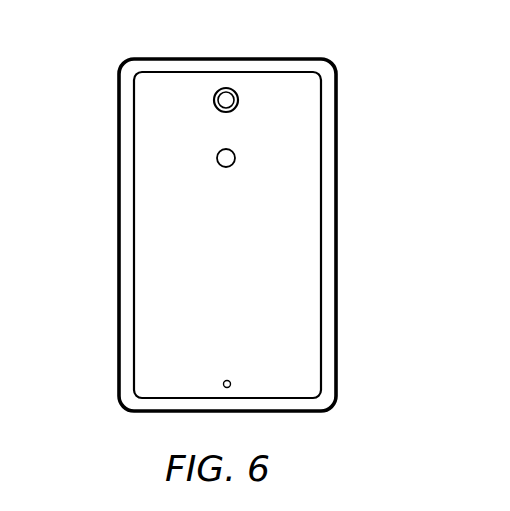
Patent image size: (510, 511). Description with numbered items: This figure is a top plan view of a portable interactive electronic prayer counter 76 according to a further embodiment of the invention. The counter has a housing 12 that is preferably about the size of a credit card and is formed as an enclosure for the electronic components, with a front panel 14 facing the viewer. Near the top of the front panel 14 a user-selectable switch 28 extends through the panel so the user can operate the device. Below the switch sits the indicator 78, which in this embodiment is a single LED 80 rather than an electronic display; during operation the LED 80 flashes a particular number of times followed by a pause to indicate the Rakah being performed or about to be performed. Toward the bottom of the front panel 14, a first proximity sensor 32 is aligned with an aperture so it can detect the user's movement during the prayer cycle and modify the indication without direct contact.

The housing 12 is at (213, 216).
The front panel 14 is at (295, 258).
The user-selectable switch 28 is at (226, 100).
The first proximity sensor 32 is at (227, 380).
The portable interactive electronic prayer counter 76 is at (100, 70).
The indicator 78 is at (243, 148).
The LED 80 is at (234, 165).